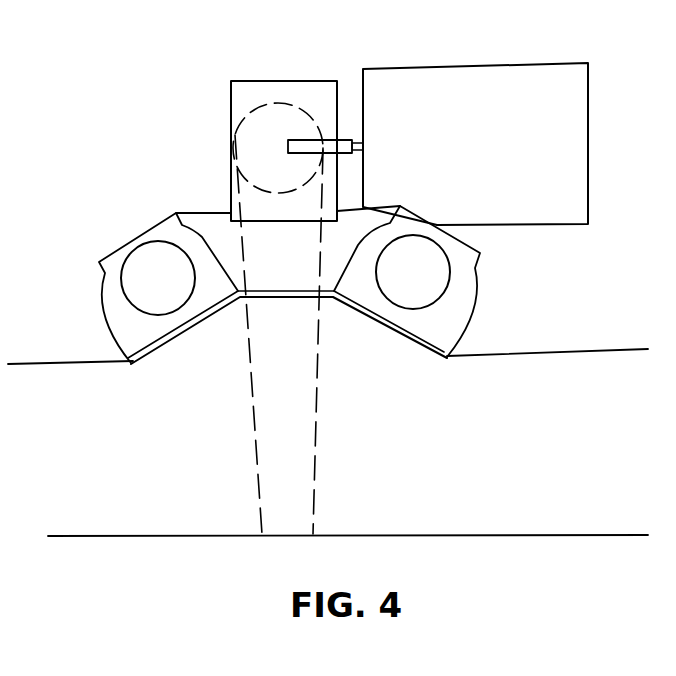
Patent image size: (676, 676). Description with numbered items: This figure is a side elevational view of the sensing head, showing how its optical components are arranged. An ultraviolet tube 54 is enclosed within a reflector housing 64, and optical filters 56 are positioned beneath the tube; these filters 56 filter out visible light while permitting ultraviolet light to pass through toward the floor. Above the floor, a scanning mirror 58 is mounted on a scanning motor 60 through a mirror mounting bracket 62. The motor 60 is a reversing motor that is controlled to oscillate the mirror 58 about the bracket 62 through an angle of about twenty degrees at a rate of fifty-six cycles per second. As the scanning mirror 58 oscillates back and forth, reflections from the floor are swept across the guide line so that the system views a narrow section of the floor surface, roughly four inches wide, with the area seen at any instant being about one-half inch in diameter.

The ultraviolet tube 54 is at (150, 258).
The optical filters 56 is at (168, 345).
The scanning mirror 58 is at (288, 78).
The scanning motor 60 is at (488, 77).
The mirror mounting bracket 62 is at (288, 142).
The reflector housing 64 is at (107, 320).